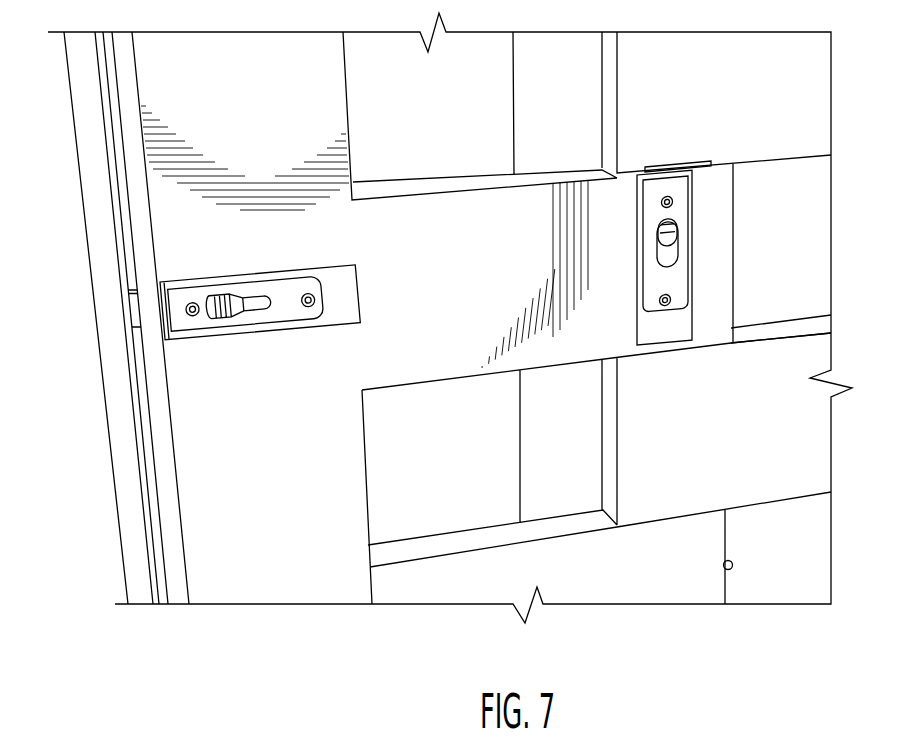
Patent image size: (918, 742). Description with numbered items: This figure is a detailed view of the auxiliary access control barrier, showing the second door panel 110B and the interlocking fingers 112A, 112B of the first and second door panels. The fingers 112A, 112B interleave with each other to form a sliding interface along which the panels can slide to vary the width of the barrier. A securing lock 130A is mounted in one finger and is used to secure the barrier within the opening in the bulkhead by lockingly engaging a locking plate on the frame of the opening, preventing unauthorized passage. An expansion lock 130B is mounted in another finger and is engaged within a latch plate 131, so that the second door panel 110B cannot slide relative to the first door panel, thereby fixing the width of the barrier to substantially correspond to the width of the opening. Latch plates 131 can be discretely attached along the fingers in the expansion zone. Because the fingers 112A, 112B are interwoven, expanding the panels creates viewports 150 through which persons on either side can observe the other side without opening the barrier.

The second door panel 110B is at (160, 158).
The fingers of the first door panel 112A is at (780, 119).
The fingers of the second door panel 112B is at (495, 263).
The securing lock 130A is at (247, 335).
The expansion lock 130B is at (692, 265).
The latch plate 131 is at (664, 165).
The viewport 150 is at (812, 218).